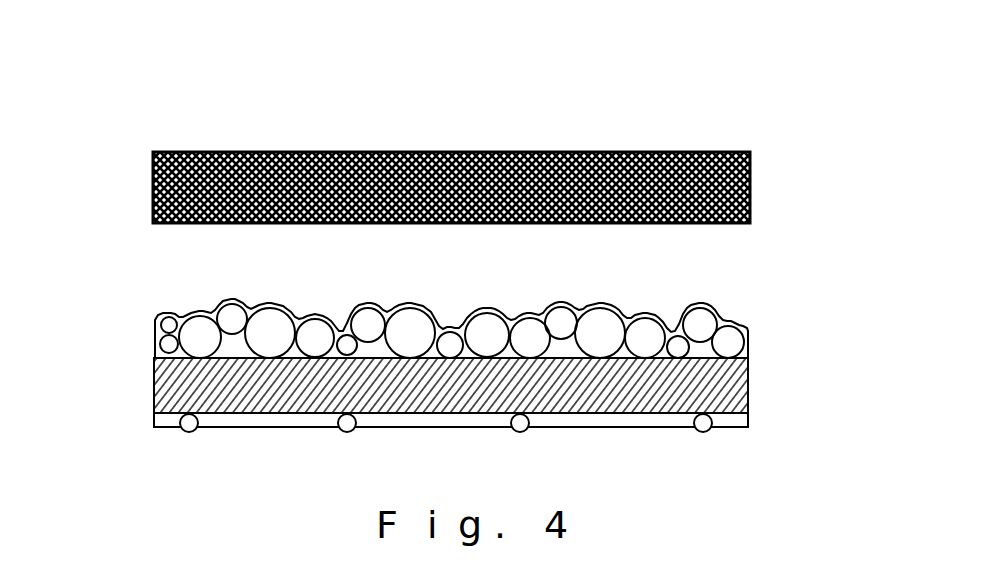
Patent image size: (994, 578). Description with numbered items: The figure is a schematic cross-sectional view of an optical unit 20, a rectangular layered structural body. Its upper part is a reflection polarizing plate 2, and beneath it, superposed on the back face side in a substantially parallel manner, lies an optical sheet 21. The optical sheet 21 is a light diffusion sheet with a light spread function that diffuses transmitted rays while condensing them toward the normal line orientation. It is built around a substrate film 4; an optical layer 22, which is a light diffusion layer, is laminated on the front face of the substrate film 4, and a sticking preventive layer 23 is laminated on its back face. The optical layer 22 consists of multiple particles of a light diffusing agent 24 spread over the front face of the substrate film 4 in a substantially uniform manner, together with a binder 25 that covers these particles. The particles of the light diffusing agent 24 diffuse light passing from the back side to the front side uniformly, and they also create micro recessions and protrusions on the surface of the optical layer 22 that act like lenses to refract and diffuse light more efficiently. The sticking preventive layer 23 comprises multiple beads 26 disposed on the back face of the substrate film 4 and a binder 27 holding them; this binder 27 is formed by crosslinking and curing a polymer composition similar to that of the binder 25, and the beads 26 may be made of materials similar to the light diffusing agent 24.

The optical unit 20 is at (175, 136).
The reflection polarizing plate 2 is at (750, 186).
The optical sheet 21 is at (137, 332).
The optical layer 22 is at (748, 342).
The substrate film 4 is at (748, 388).
The sticking preventive layer 23 is at (748, 418).
The light diffusing agent 24 is at (412, 330).
The binder 25 is at (565, 347).
The beads 26 is at (520, 432).
The binder 27 is at (412, 417).